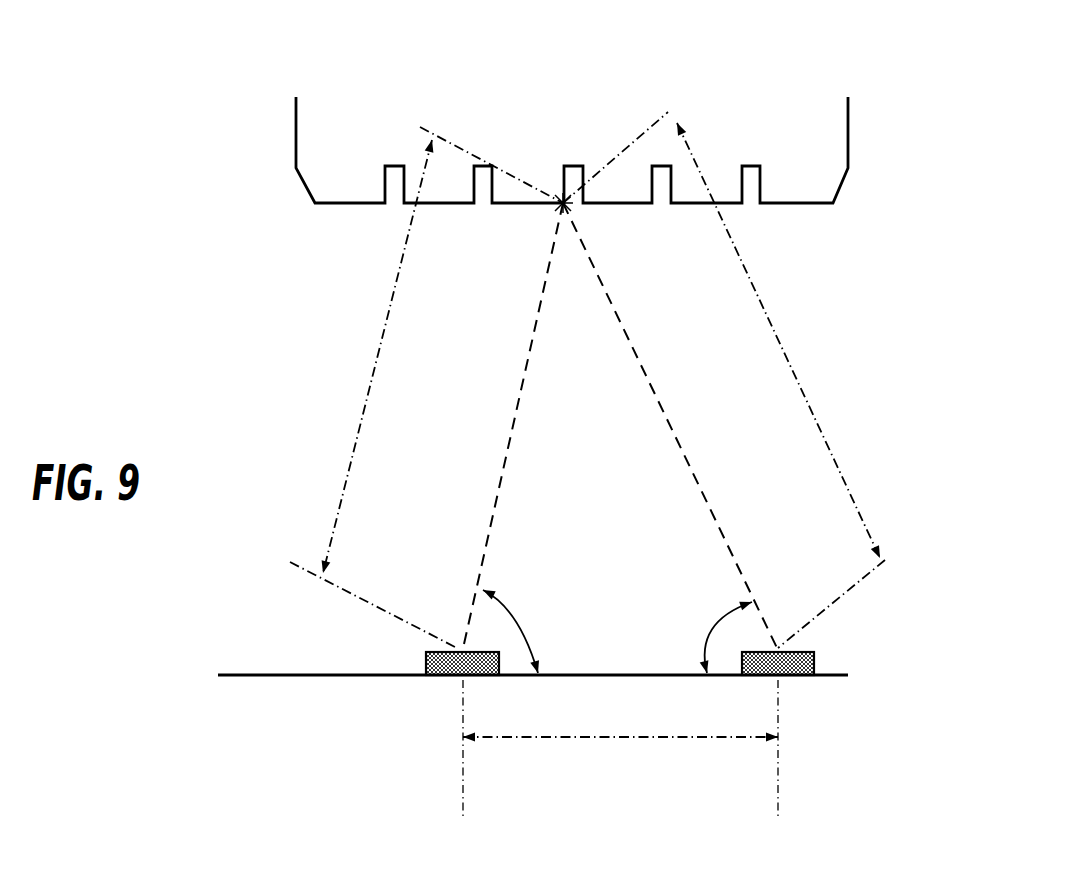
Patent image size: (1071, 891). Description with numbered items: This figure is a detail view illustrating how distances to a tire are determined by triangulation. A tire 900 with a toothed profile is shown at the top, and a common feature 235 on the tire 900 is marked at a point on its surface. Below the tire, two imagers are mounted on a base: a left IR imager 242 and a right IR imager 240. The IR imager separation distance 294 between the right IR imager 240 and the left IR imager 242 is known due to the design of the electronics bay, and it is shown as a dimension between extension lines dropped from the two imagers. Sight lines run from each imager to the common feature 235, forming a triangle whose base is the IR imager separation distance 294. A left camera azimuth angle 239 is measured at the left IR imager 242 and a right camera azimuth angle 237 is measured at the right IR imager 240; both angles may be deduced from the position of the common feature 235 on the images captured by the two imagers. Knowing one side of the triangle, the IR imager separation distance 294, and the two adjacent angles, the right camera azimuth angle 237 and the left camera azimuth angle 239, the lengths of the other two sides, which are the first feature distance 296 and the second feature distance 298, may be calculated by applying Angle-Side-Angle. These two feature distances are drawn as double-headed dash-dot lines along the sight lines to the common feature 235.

The tire 900 is at (853, 128).
The common feature 235 is at (558, 197).
The left IR imager 242 is at (440, 678).
The right IR imager 240 is at (797, 678).
The left camera azimuth angle 239 is at (518, 598).
The right camera azimuth angle 237 is at (715, 628).
The second feature distance 298 is at (362, 410).
The first feature distance 296 is at (820, 412).
The IR imager separation distance 294 is at (603, 740).